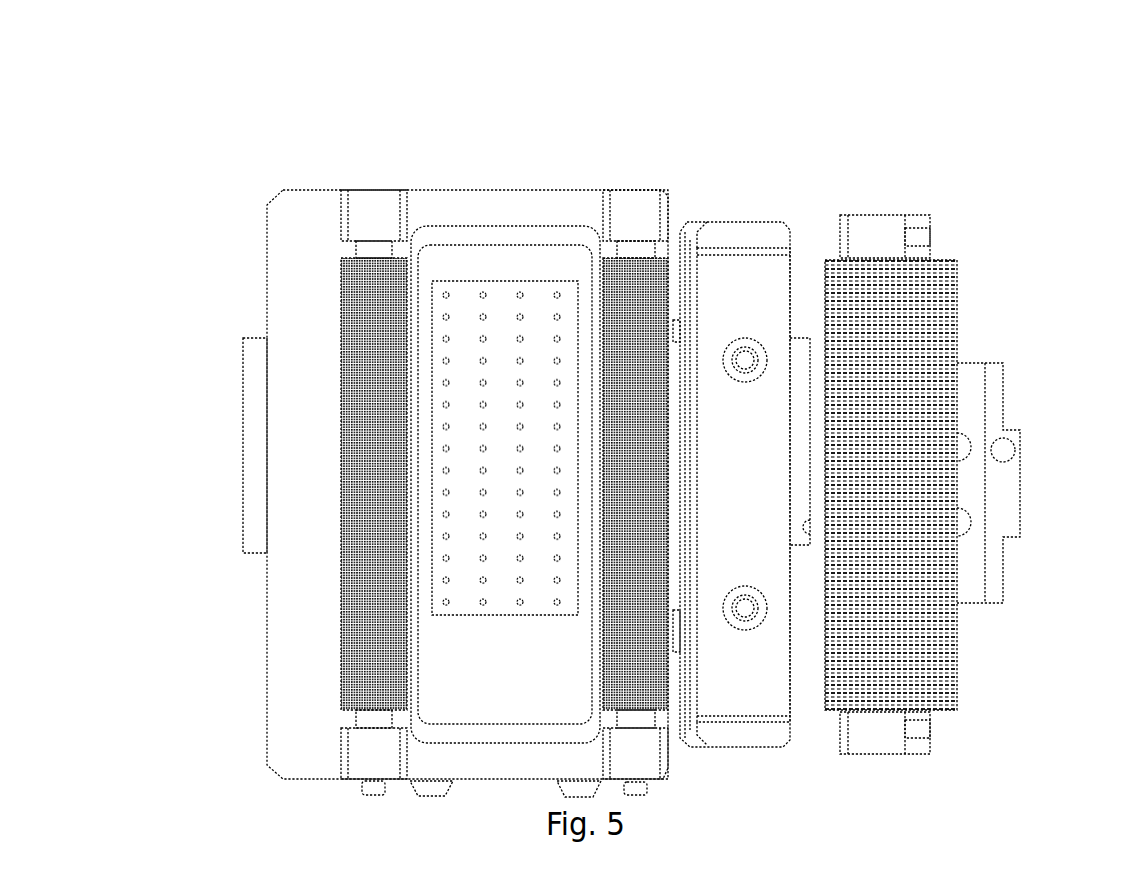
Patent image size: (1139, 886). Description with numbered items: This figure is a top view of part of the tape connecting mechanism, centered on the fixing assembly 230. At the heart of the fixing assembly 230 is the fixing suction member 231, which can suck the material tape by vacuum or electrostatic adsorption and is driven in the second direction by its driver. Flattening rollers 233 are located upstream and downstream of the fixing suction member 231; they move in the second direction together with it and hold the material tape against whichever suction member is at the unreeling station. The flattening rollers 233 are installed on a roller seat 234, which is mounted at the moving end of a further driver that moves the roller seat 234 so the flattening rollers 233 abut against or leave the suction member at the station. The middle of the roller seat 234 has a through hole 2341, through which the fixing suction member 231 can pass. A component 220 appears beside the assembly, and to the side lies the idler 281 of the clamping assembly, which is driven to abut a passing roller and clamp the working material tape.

The fixing assembly 230 is at (252, 593).
The fixing suction member 231 is at (445, 355).
The flattening rollers 233 is at (341, 258).
The roller seat 234 is at (448, 210).
The through hole 2341 is at (510, 230).
The mounting plate 220 is at (730, 210).
The idler 281 is at (945, 262).